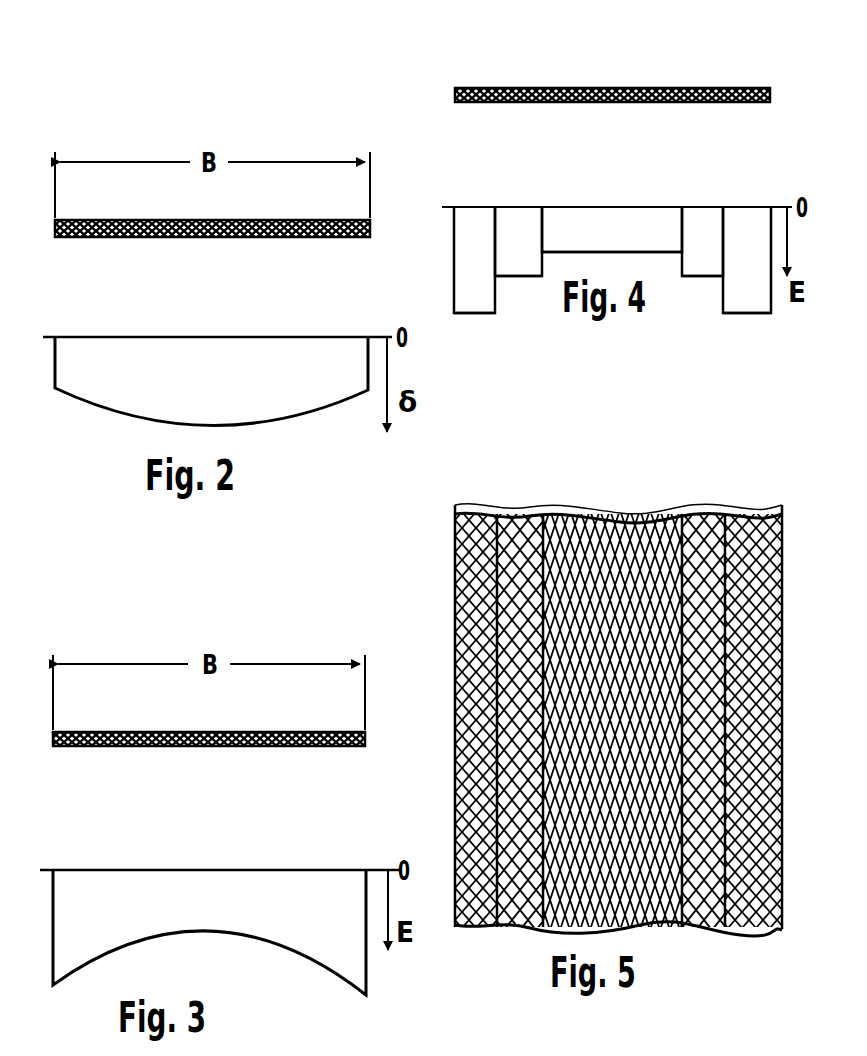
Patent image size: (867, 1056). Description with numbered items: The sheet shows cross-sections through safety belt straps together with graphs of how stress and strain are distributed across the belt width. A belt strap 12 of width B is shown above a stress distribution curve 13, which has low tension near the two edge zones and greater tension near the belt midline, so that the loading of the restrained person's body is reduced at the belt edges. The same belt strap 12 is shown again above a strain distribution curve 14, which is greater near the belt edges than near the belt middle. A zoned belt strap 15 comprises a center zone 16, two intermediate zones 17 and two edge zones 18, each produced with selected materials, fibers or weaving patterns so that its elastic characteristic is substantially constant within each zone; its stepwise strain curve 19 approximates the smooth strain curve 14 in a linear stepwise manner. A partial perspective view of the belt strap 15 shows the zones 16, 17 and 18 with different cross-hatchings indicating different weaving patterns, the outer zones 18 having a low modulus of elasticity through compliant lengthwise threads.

In FIG. 2, the belt strap 12 is at (355, 238).
In FIG. 3, the belt strap 12 is at (351, 747).
In FIG. 2, the stress distribution curve 13 is at (318, 410).
In FIG. 3, the strain distribution curve 14 is at (290, 946).
In FIG. 4, the belt strap 15 is at (745, 88).
In FIG. 5, the belt strap 15 is at (450, 571).
In FIG. 4, the center zone 16 is at (612, 222).
In FIG. 5, the center zone 16 is at (623, 520).
In FIG. 4, the intermediate zones 17 is at (699, 222).
In FIG. 5, the intermediate zones 17 is at (710, 515).
In FIG. 4, the edge zones 18 is at (748, 222).
In FIG. 5, the edge zones 18 is at (758, 510).
In FIG. 4, the stepwise strain distribution curve 19 is at (740, 313).